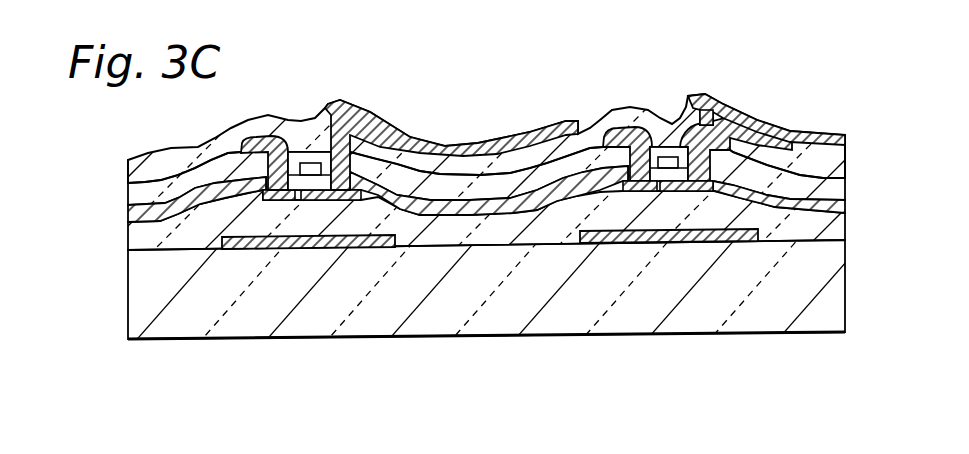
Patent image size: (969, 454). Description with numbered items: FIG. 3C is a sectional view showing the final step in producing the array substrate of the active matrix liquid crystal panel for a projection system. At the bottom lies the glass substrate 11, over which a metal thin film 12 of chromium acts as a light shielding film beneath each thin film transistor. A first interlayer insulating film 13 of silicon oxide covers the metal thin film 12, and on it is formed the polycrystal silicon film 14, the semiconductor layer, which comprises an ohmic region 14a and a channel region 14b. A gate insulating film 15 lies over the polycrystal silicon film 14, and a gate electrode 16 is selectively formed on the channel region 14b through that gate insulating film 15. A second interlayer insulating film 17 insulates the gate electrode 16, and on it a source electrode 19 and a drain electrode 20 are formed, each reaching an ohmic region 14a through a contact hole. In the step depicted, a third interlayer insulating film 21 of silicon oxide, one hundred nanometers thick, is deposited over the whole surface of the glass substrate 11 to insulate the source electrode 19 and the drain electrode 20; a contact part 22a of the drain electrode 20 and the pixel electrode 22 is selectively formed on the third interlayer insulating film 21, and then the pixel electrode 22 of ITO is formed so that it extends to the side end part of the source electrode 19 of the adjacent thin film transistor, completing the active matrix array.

The glass substrate 11 is at (850, 303).
The metal thin film 12 is at (737, 245).
The first interlayer insulating film 13 is at (846, 234).
The polycrystal silicon film 14 is at (676, 303).
The ohmic region 14a is at (645, 192).
The channel region 14b is at (665, 192).
The gate insulating film 15 is at (845, 205).
The gate electrode 16 is at (672, 157).
The second interlayer insulating film 17 is at (845, 178).
The source electrode 19 is at (620, 115).
The drain electrode 20 is at (735, 122).
The third interlayer insulating film 21 is at (845, 149).
The pixel electrode 22 is at (800, 131).
The contact part 22a is at (707, 108).